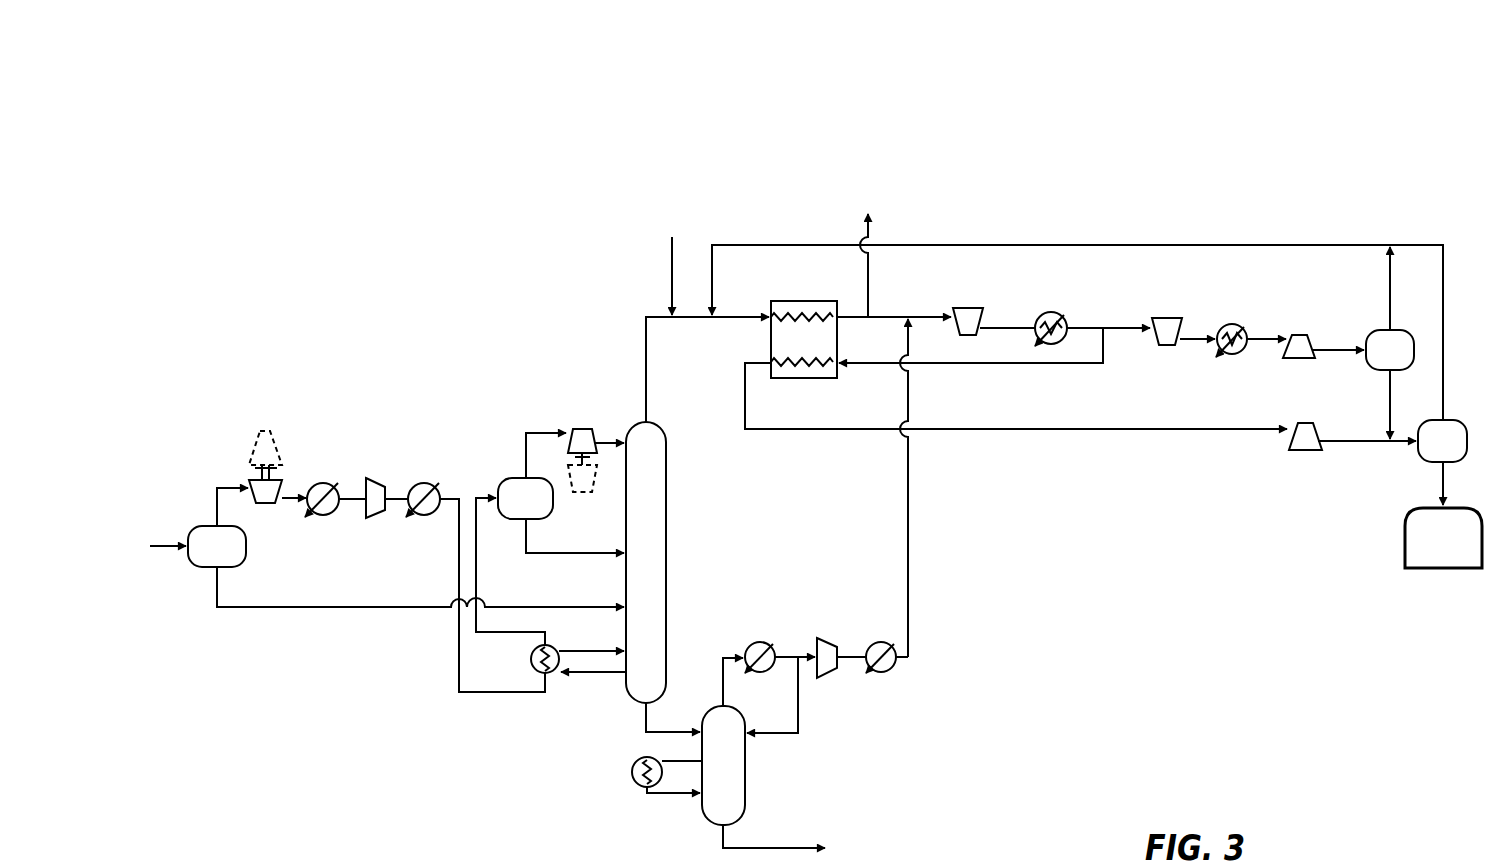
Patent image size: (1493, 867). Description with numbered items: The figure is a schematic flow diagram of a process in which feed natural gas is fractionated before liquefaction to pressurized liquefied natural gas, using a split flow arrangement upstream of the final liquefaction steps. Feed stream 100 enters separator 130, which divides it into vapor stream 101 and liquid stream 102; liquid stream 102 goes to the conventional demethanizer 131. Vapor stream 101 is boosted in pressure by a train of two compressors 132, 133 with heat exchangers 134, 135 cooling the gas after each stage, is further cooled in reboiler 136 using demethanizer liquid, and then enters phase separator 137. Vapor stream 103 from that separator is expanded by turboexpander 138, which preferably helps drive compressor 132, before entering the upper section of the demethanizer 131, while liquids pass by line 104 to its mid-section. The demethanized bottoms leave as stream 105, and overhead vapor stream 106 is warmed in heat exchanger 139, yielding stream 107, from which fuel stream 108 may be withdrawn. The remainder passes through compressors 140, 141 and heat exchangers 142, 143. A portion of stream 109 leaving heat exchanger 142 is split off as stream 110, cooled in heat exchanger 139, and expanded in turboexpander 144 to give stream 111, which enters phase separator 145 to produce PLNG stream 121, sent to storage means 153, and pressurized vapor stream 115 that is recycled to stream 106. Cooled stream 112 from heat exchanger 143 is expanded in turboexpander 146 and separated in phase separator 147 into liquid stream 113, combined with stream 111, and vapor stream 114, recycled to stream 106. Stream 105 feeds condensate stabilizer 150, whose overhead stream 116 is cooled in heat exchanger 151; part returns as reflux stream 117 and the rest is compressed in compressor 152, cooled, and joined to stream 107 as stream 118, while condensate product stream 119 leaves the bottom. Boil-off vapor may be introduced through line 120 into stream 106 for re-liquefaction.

The feed stream 100 is at (157, 556).
The vapor stream 101 is at (216, 490).
The liquid stream 102 is at (255, 608).
The vapor stream 103 is at (548, 430).
The line 104 is at (546, 553).
The stream 105 is at (646, 722).
The overhead vapor stream 106 is at (647, 378).
The warmed vapor stream 107 is at (848, 319).
The fuel stream 108 is at (869, 280).
The stream 109 is at (1090, 327).
The stream 110 is at (998, 363).
The stream 111 is at (1345, 441).
The cooled stream 112 is at (1265, 338).
The liquid stream 113 is at (1390, 409).
The vapor stream 114 is at (1390, 292).
The pressurized gas vapor stream 115 is at (1443, 294).
The overhead stream 116 is at (722, 684).
The reflux stream 117 is at (799, 708).
The cooled gas stream 118 is at (909, 536).
The condensate product stream 119 is at (770, 848).
The line 120 is at (672, 273).
The PLNG stream 121 is at (1443, 475).
The separator 130 is at (247, 560).
The demethanizer 131 is at (667, 537).
The compressor 132 is at (258, 505).
The compressor 133 is at (378, 482).
The heat exchanger 134 is at (330, 483).
The heat exchanger 135 is at (428, 483).
The reboiler 136 is at (531, 661).
The phase separator 137 is at (505, 478).
The turboexpander 138 is at (264, 438).
The heat exchanger 139 is at (790, 378).
The compressor 140 is at (965, 308).
The compressor 141 is at (1163, 318).
The heat exchanger 142 is at (1047, 312).
The heat exchanger 143 is at (1221, 325).
The turboexpander 144 is at (1297, 451).
The phase separator 145 is at (1428, 420).
The turboexpander 146 is at (1297, 359).
The phase separator 147 is at (1420, 331).
The condensate stabilizer 150 is at (746, 784).
The heat exchanger 151 is at (755, 643).
The compressor 152 is at (827, 640).
The storage means 153 is at (1405, 540).